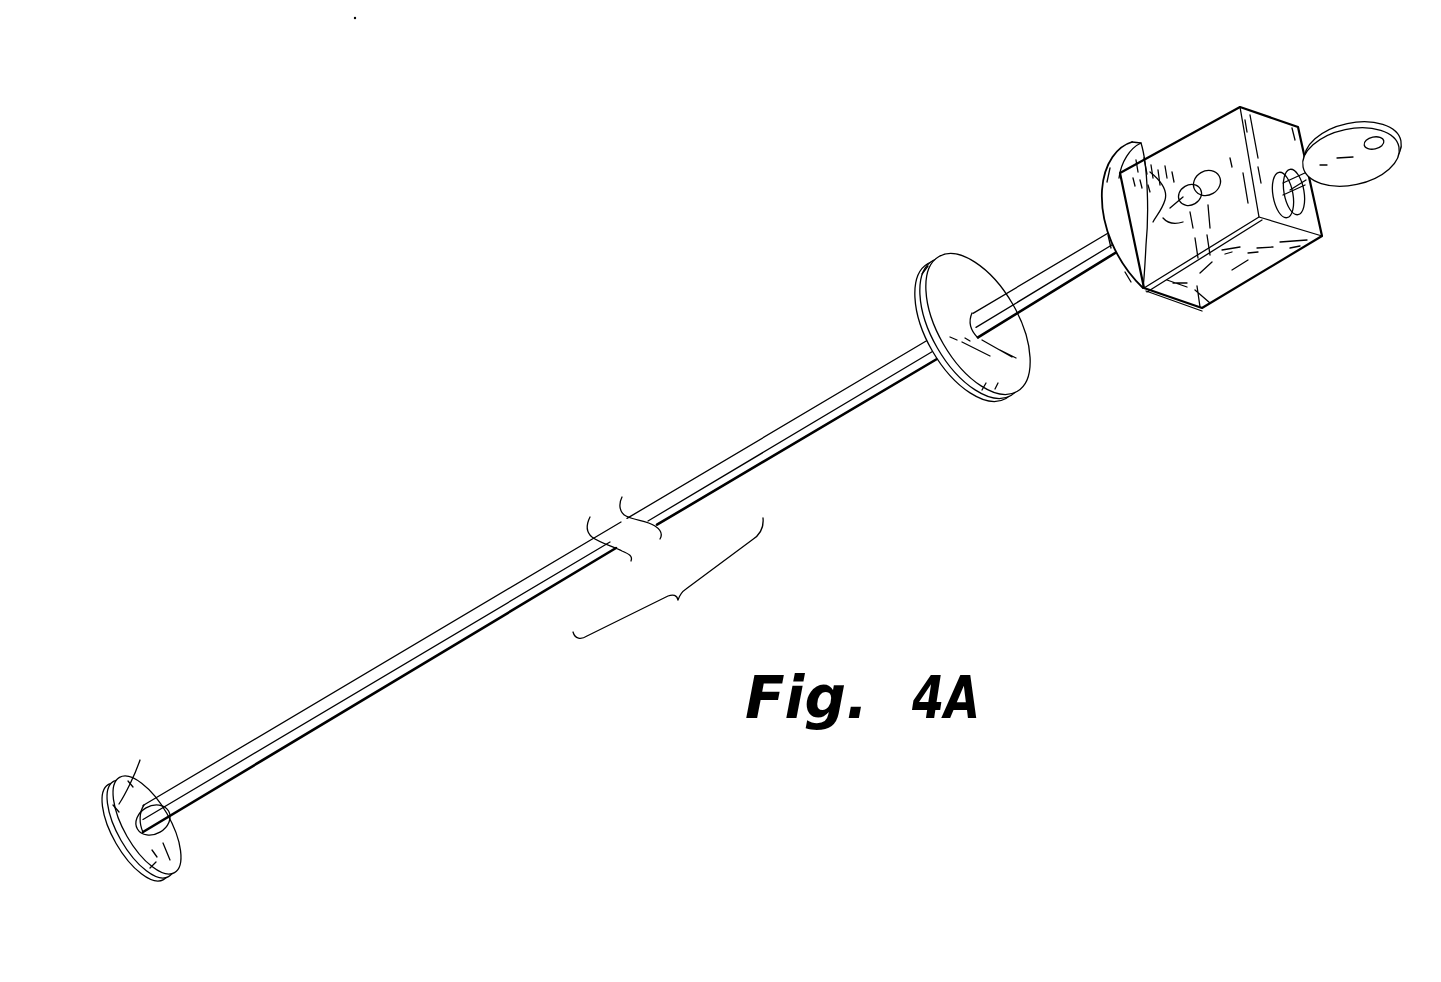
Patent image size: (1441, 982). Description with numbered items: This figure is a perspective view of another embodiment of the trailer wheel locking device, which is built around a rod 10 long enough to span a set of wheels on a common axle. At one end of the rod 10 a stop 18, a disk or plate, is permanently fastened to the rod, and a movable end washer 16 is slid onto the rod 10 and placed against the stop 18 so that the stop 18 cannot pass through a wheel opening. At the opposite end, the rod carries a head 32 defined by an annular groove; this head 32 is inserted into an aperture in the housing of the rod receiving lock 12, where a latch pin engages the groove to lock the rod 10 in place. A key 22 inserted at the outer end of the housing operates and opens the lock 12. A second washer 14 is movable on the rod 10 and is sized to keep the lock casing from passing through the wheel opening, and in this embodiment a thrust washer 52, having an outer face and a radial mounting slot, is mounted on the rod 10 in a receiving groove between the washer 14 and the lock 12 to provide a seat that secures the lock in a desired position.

The rod 10 is at (723, 458).
The rod receiving lock 12 is at (1258, 274).
The second washer 14 is at (952, 253).
The movable end washer 16 is at (181, 846).
The stop 18 is at (120, 803).
The key 22 is at (1387, 127).
The head 32 is at (1205, 178).
The thrust washer 52 is at (1104, 194).